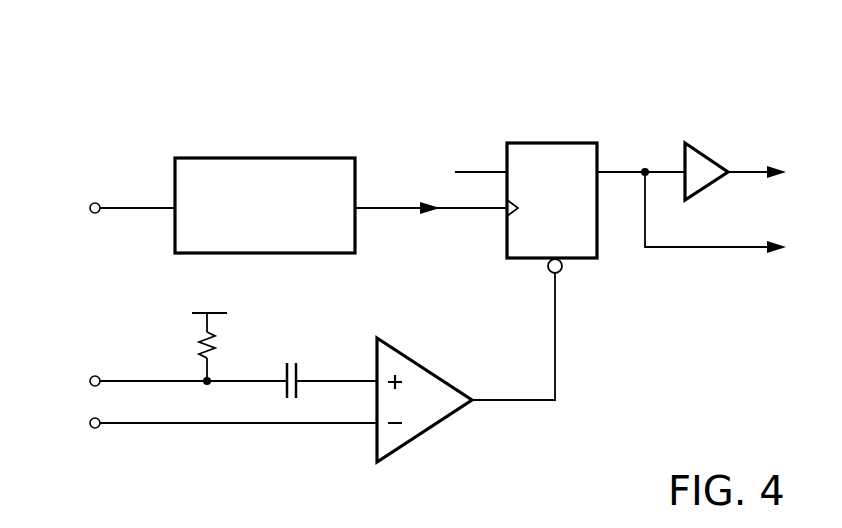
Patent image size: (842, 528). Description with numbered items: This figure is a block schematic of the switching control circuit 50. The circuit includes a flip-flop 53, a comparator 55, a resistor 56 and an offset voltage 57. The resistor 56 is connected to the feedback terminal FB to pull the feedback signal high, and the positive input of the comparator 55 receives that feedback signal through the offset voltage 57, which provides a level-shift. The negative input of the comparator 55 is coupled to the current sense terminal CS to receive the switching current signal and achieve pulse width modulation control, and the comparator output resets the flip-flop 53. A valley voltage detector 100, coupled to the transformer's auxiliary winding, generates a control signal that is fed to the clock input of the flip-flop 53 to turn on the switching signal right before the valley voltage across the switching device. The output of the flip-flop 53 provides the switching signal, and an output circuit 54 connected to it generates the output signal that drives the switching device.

The switching control circuit 50 is at (790, 45).
The valley voltage detector 100 is at (268, 158).
The flip-flop 53 is at (553, 143).
The output circuit 54 is at (712, 152).
The comparator 55 is at (430, 365).
The resistor 56 is at (196, 348).
The offset voltage 57 is at (293, 360).